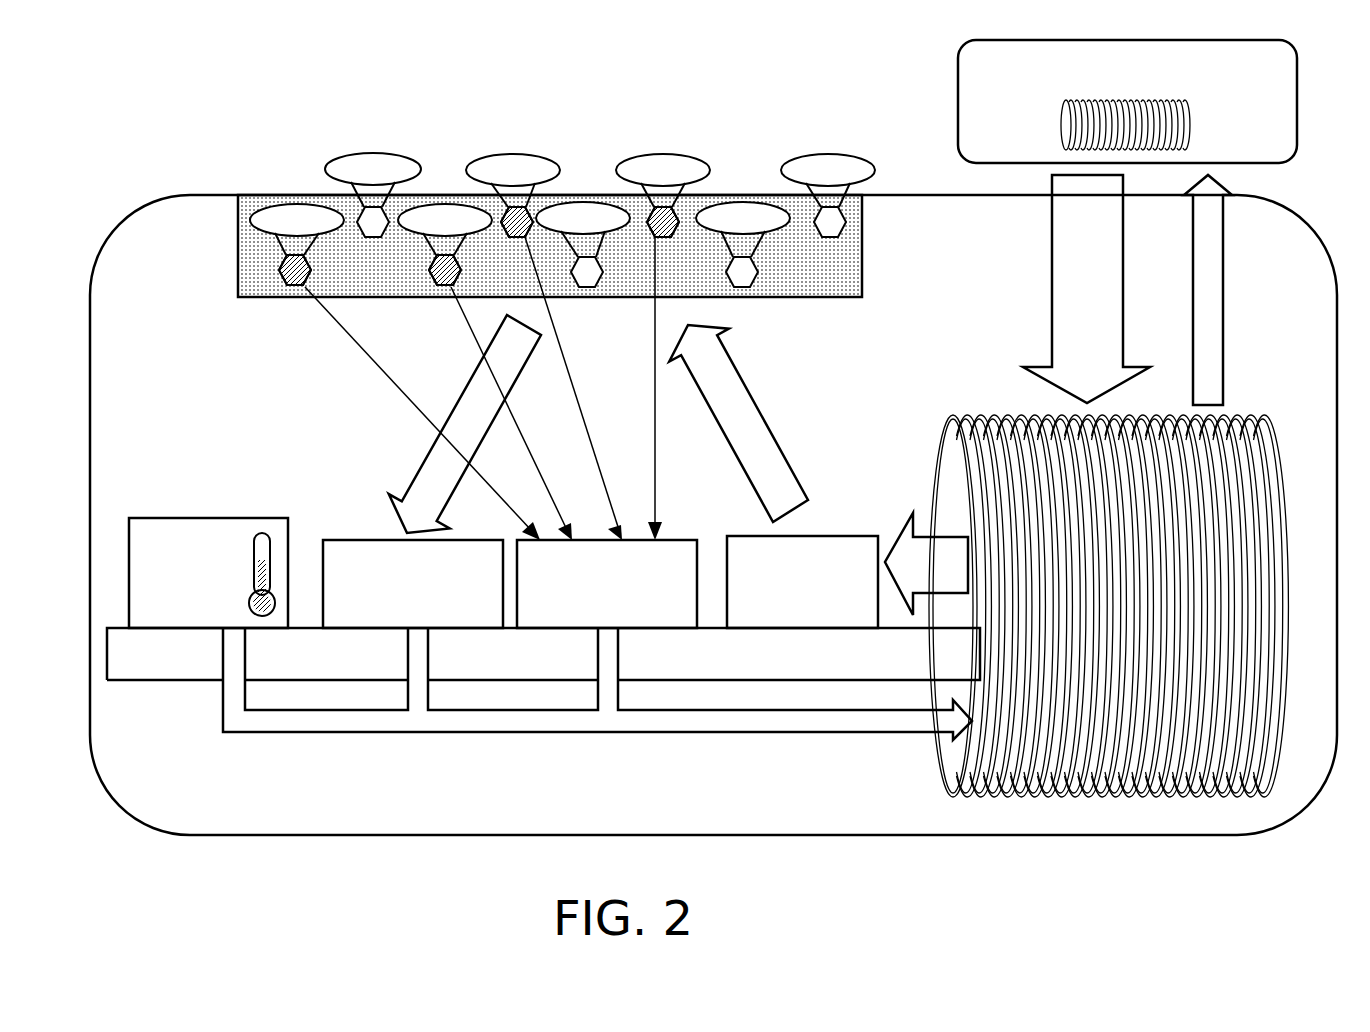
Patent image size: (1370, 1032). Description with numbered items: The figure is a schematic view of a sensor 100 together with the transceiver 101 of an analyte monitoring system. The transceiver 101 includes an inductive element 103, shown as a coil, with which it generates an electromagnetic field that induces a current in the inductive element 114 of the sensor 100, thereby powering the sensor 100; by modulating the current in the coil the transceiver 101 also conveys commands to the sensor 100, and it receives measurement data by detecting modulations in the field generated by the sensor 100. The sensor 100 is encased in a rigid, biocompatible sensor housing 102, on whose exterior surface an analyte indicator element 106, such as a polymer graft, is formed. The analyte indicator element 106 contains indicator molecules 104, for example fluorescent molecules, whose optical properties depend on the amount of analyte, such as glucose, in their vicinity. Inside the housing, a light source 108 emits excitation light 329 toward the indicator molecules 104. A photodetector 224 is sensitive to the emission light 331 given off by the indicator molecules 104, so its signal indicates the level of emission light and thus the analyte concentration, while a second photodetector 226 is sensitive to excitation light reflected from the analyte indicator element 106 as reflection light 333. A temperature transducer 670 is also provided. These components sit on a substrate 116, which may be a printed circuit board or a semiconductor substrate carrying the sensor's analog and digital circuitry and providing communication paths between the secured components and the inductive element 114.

The sensor 100 is at (113, 182).
The transceiver 101 is at (957, 108).
The sensor housing 102 is at (243, 837).
The inductive element 103 is at (1218, 98).
The indicator molecules 104 is at (562, 105).
The analyte indicator element 106 is at (238, 268).
The light source 108 is at (848, 535).
The inductive element 114 is at (1118, 797).
The substrate 116 is at (195, 681).
The photodetector 224 is at (672, 539).
The photodetector 226 is at (360, 539).
The excitation light 329 is at (780, 445).
The emission light 331 is at (404, 393).
The reflection light 333 is at (423, 450).
The temperature transducer 670 is at (200, 517).